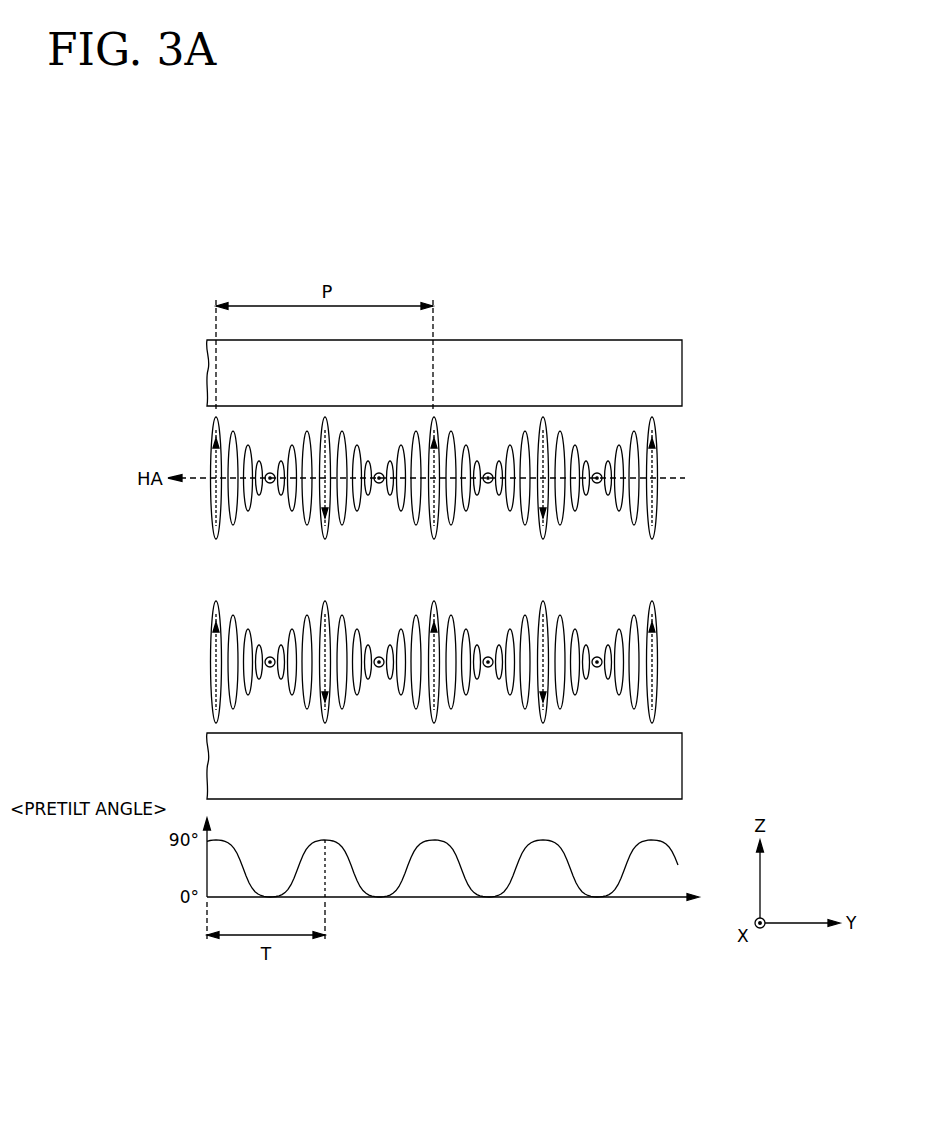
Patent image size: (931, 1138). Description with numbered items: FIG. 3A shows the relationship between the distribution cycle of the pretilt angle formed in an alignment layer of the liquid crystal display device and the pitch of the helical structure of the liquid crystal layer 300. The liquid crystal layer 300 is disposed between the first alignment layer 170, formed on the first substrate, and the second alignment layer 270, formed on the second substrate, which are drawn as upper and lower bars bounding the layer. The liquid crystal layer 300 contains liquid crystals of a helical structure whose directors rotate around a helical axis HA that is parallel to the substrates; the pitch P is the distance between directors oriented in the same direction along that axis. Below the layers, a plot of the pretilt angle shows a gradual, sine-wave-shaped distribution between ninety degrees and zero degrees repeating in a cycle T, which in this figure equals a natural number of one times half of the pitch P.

The second alignment layer 270 is at (670, 374).
The first alignment layer 170 is at (670, 770).
The liquid crystal layer 300 is at (690, 410).